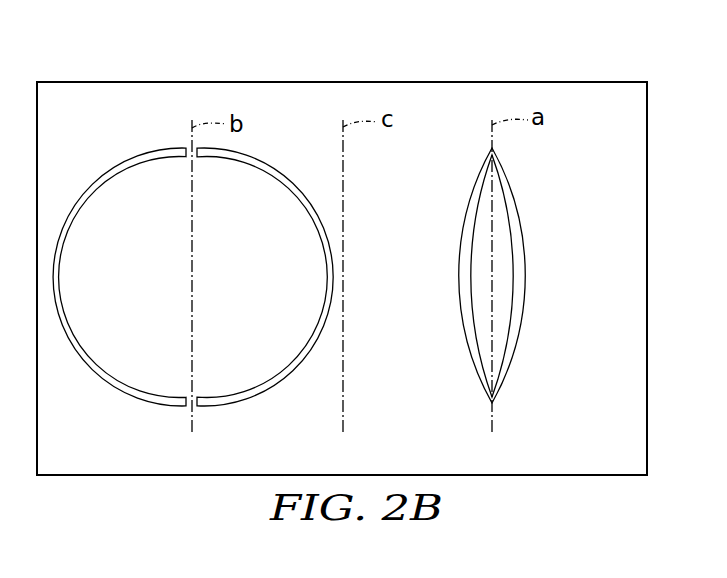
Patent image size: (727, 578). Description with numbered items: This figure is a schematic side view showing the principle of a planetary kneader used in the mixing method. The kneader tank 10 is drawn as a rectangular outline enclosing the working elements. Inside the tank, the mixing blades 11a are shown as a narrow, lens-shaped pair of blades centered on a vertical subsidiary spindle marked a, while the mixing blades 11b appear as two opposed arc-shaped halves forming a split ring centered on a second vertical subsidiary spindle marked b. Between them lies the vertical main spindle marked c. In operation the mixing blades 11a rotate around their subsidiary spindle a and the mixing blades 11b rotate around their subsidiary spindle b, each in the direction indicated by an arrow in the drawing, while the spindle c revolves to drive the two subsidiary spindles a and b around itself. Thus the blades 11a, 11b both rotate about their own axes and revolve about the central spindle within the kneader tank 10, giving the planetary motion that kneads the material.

The kneader tank 10 is at (590, 83).
The mixing blades 11a is at (463, 303).
The mixing blades 11b is at (67, 280).